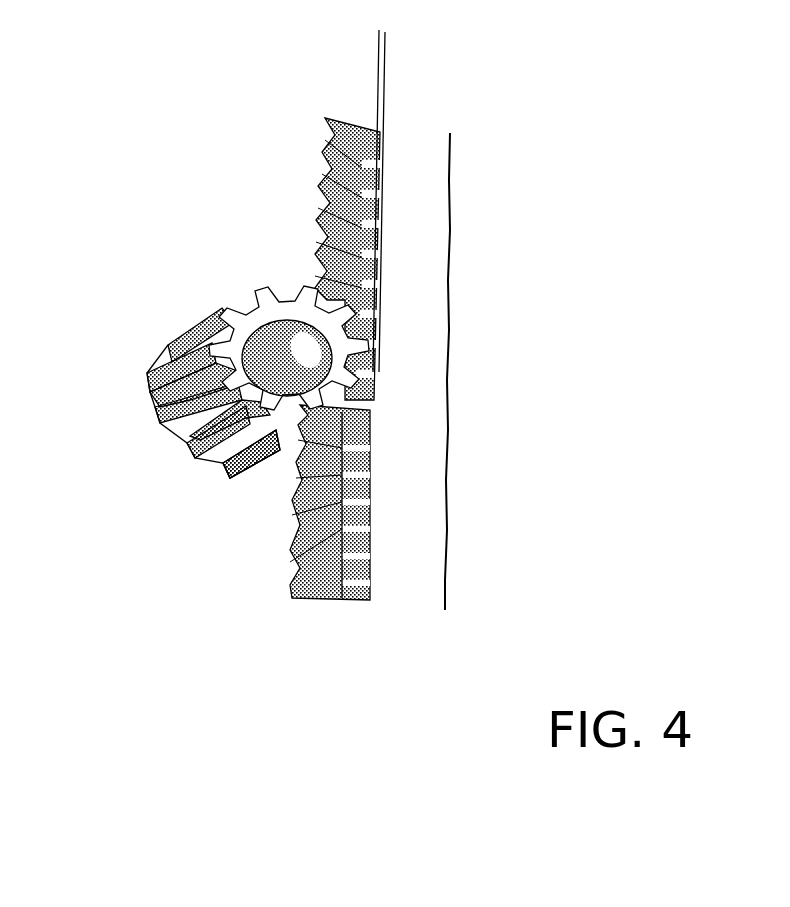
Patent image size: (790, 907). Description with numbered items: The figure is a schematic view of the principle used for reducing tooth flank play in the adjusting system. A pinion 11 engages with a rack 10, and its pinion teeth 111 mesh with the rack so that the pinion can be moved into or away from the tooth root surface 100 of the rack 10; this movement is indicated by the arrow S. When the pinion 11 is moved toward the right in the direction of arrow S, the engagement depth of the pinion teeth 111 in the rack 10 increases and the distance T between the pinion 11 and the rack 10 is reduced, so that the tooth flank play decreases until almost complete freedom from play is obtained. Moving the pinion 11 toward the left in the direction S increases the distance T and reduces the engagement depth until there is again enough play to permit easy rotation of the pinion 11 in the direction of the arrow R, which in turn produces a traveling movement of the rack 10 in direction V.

The tooth root surface 100 is at (373, 472).
The pinion 11 is at (248, 292).
The pinion teeth 111 is at (233, 467).
The rack 10 is at (448, 443).
The arrow R is at (373, 372).
The distance T is at (413, 71).
The arrow S is at (147, 347).
The direction V is at (422, 403).